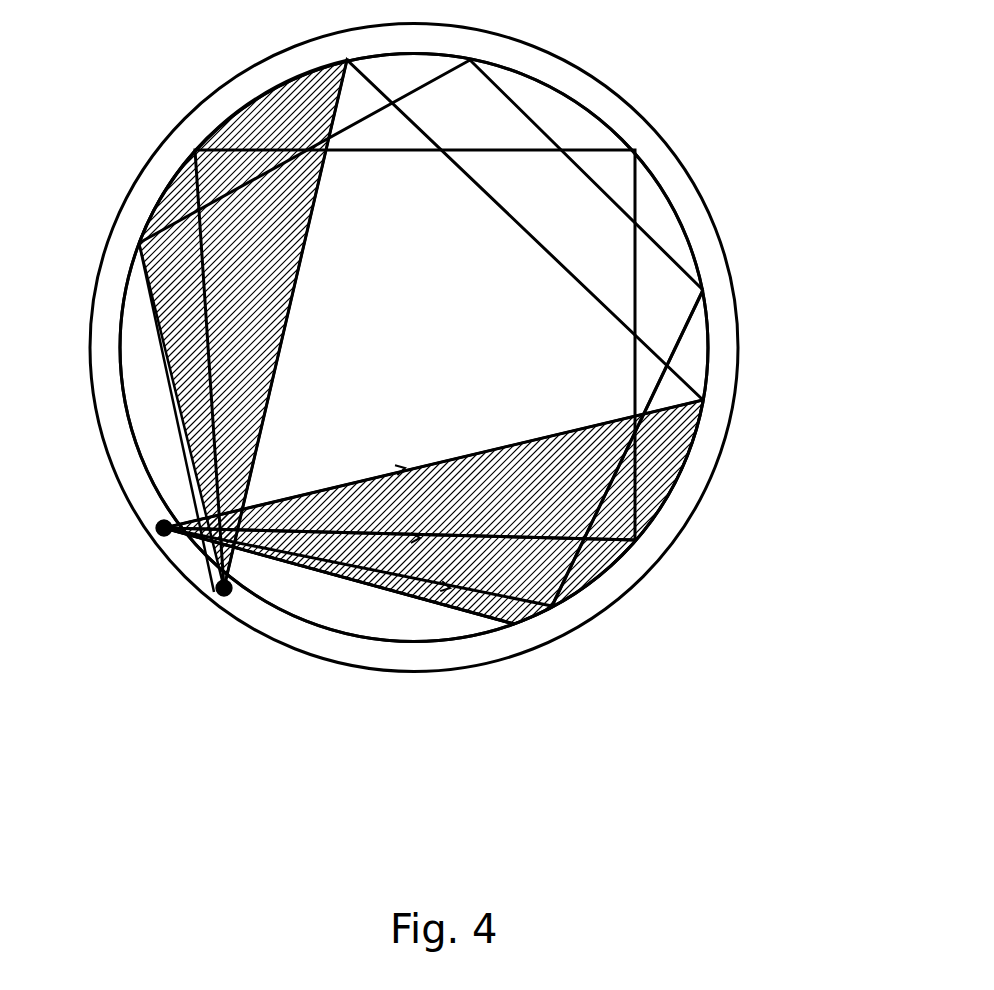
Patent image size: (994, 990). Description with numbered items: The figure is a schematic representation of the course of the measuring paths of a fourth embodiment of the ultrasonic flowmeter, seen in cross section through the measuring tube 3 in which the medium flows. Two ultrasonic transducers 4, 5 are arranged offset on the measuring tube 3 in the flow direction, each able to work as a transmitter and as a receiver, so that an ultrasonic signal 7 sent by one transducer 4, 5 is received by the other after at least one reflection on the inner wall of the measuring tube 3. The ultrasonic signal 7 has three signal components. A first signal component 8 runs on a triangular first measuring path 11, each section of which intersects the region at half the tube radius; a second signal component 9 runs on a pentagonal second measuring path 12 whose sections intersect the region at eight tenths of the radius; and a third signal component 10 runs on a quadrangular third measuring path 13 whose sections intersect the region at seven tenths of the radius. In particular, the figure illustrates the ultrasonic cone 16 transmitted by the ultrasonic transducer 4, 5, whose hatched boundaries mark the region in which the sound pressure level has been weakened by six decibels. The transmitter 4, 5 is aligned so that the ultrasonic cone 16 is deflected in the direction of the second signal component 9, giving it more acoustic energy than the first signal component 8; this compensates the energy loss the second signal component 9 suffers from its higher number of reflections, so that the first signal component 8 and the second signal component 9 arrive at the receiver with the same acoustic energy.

The measuring tube 3 is at (707, 448).
The ultrasonic transducer 4 is at (158, 534).
The ultrasonic transducer 5 is at (219, 598).
The ultrasonic signal 7 is at (398, 582).
The first signal component 8 is at (658, 497).
The first measuring path 11 is at (414, 348).
The second signal component 9 is at (503, 622).
The second measuring path 12 is at (339, 576).
The third signal component 10 is at (552, 606).
The third measuring path 13 is at (627, 448).
The ultrasonic cone 16 is at (162, 347).